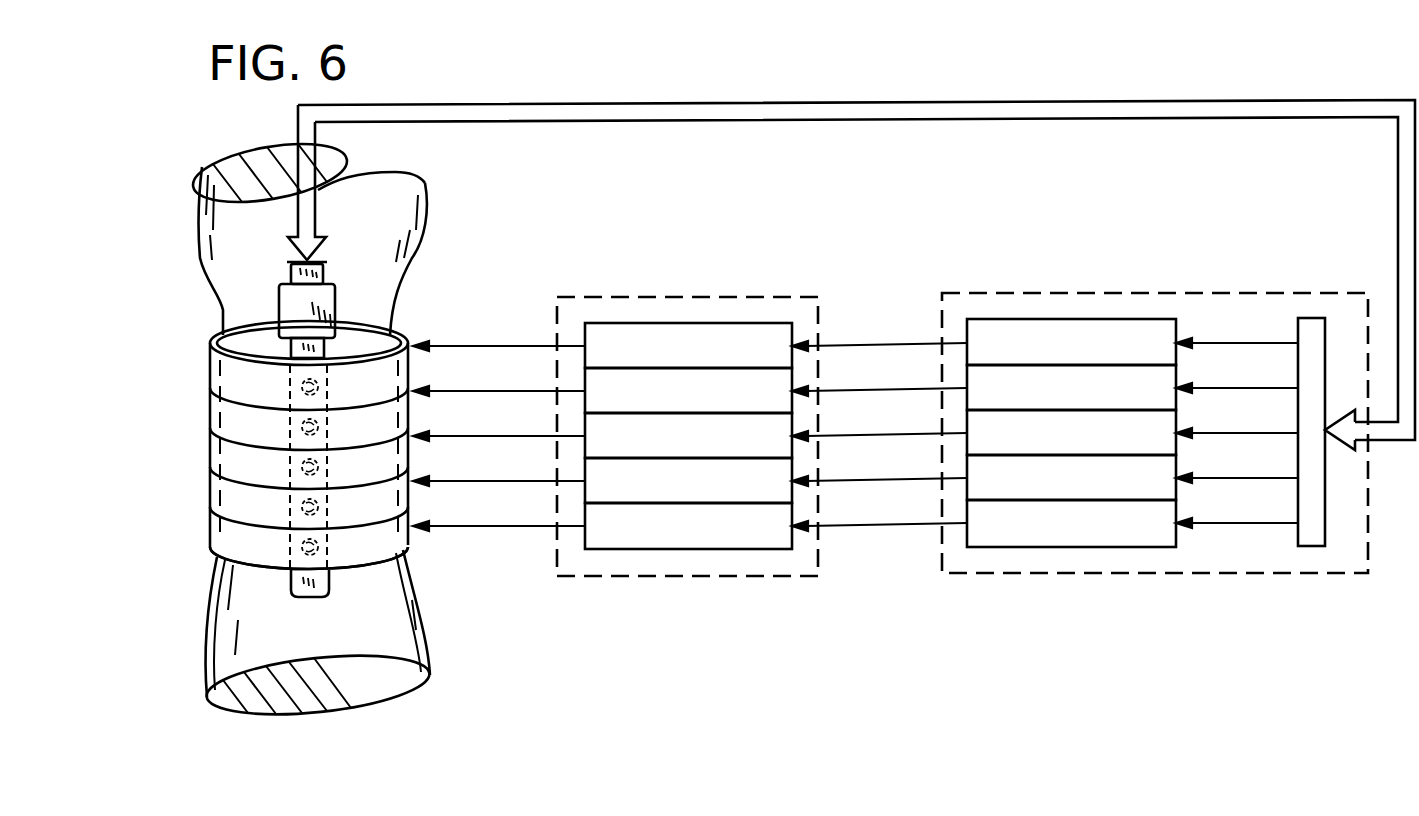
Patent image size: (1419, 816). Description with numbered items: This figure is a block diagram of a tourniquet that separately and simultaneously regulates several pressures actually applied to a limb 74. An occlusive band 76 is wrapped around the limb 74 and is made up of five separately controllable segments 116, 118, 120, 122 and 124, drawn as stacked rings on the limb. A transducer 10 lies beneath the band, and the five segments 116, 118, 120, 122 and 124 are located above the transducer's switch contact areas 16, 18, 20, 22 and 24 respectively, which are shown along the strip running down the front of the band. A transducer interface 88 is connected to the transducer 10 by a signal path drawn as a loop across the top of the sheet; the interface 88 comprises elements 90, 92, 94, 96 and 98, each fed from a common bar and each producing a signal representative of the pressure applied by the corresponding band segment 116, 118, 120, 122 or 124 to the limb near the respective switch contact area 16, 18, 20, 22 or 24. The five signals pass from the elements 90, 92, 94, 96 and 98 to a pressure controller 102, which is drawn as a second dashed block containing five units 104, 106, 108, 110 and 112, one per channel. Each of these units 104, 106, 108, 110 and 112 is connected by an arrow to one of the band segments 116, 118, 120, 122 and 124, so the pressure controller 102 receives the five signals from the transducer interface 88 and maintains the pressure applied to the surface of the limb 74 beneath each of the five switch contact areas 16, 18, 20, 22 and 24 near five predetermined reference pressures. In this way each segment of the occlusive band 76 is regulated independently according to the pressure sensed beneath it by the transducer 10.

The transducer 10 is at (272, 298).
The switch contact area 16 is at (322, 389).
The switch contact area 18 is at (322, 429).
The switch contact area 20 is at (322, 469).
The switch contact area 22 is at (322, 509).
The switch contact area 24 is at (322, 549).
The limb 74 is at (206, 592).
The occlusive band 76 is at (234, 445).
The transducer interface 88 is at (1155, 469).
The transducer interface element 90 is at (1071, 342).
The transducer interface element 92 is at (1071, 387).
The transducer interface element 94 is at (1071, 432).
The transducer interface element 96 is at (1071, 477).
The transducer interface element 98 is at (1071, 523).
The pressure controller 102 is at (687, 472).
The driver 104 is at (688, 345).
The driver 106 is at (688, 390).
The driver 108 is at (688, 435).
The driver 110 is at (688, 480).
The driver 112 is at (688, 526).
The occlusive band segment 116 is at (210, 350).
The occlusive band segment 118 is at (210, 388).
The occlusive band segment 120 is at (210, 428).
The occlusive band segment 122 is at (210, 467).
The occlusive band segment 124 is at (267, 538).